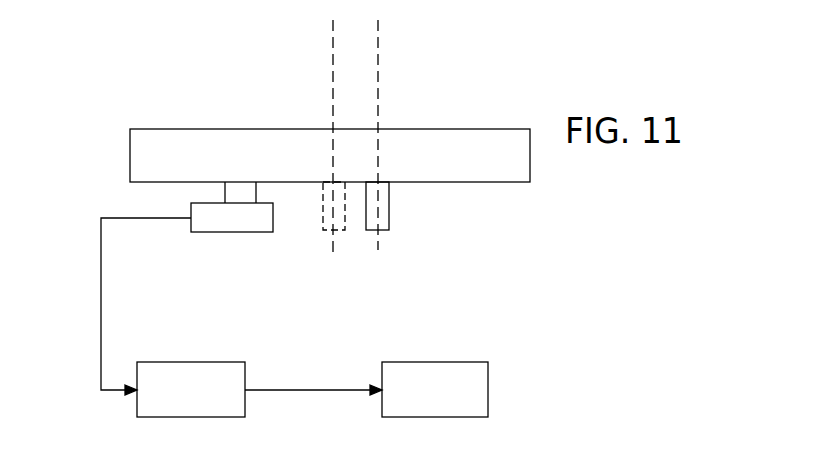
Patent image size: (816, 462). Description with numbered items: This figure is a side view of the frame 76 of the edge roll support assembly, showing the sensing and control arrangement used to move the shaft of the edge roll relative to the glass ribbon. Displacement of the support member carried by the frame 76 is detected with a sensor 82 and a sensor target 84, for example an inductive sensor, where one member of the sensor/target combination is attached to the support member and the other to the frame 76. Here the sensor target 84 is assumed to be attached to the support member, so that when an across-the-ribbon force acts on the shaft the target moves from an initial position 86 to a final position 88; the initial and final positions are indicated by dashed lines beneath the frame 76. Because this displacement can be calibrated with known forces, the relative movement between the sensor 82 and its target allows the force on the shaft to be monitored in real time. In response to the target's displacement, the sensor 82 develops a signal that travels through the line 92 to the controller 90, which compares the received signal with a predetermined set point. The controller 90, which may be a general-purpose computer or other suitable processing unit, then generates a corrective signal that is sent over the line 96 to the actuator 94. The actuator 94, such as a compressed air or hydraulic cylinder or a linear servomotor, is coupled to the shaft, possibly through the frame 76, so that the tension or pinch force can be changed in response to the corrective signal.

The frame 76 is at (183, 128).
The sensor 82 is at (213, 232).
The sensor target 84 is at (389, 217).
The initial position 86 is at (332, 37).
The final position 88 is at (378, 251).
The controller 90 is at (180, 417).
The line 92 is at (101, 300).
The actuator 94 is at (460, 362).
The line 96 is at (313, 390).